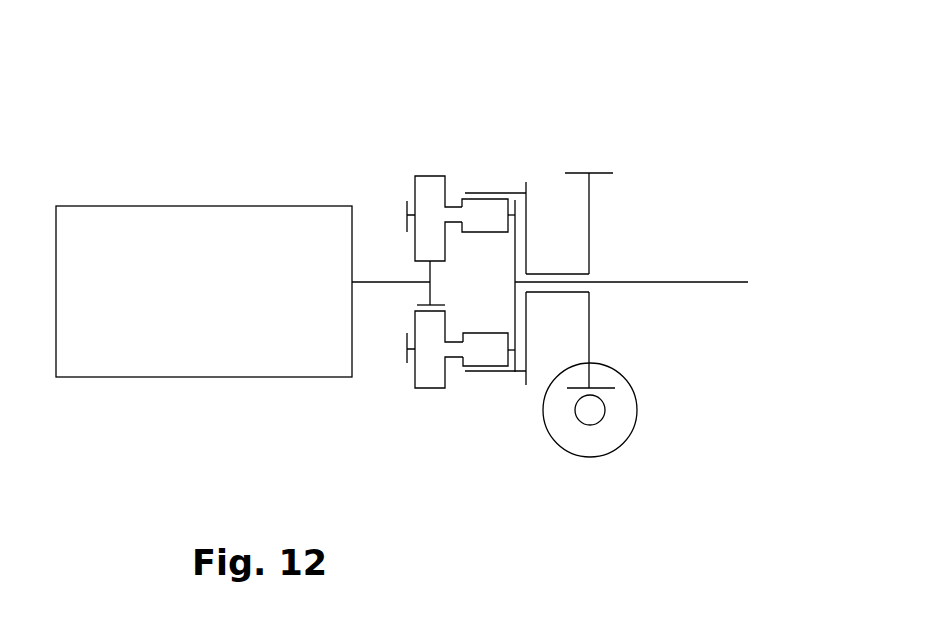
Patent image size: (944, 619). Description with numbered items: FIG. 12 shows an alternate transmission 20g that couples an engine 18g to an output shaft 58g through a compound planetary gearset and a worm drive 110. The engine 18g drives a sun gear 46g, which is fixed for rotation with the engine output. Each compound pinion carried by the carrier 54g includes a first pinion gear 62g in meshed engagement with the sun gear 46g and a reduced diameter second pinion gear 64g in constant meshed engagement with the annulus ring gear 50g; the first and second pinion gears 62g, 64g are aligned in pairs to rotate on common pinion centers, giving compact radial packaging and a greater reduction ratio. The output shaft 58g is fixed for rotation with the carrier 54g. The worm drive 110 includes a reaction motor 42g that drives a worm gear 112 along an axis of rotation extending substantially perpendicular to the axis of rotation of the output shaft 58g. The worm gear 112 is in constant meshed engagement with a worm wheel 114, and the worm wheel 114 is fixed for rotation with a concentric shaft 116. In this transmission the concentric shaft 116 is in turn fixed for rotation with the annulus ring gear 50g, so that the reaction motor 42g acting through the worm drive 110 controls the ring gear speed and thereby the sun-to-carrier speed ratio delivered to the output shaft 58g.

The engine 18g is at (219, 205).
The transmission 20g is at (689, 86).
The reaction motor 42g is at (607, 410).
The sun gear 46g is at (418, 251).
The annulus ring gear 50g is at (470, 192).
The carrier 54g is at (407, 348).
The output shaft 58g is at (732, 280).
The first pinion gear 62g is at (423, 195).
The second pinion gear 64g is at (497, 198).
The worm drive 110 is at (594, 157).
The worm gear 112 is at (576, 406).
The worm wheel 114 is at (590, 210).
The concentric shaft 116 is at (550, 272).